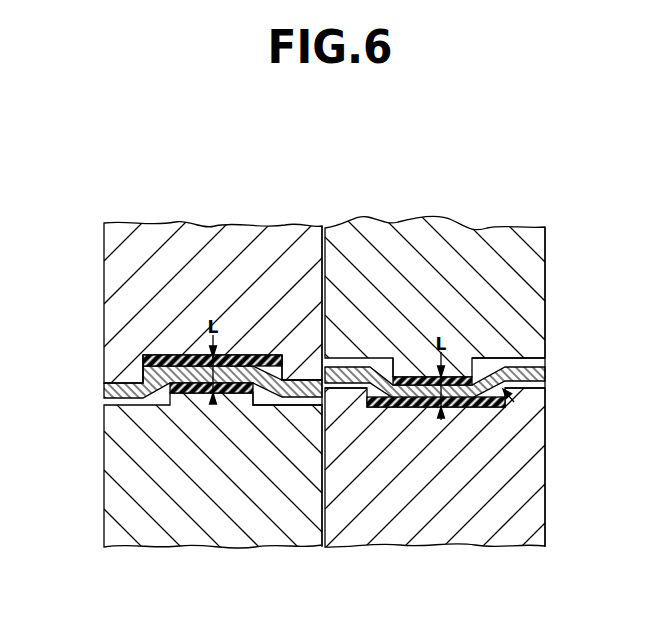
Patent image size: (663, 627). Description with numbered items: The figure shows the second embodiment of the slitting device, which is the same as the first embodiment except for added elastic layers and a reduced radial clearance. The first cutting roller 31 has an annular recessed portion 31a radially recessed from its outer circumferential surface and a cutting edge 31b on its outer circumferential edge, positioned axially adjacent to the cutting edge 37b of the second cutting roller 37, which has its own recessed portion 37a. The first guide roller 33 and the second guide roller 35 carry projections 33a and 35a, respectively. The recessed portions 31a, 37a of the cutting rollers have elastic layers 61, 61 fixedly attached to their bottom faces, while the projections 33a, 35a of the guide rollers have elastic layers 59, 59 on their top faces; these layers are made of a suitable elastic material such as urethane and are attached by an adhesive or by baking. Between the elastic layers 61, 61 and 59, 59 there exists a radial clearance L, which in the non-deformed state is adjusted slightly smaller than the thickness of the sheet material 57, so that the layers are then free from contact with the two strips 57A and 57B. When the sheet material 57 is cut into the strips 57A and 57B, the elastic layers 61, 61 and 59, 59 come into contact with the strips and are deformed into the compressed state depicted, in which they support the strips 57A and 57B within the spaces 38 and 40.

The first cutting roller 31 is at (216, 247).
The recessed portion 31a is at (276, 372).
The cutting edge 31b is at (320, 370).
The first guide roller 33 is at (426, 245).
The projection 33a is at (379, 372).
The second guide roller 35 is at (212, 522).
The projection 35a is at (267, 396).
The second cutting roller 37 is at (437, 527).
The recessed portion 37a is at (546, 387).
The cutting edge 37b is at (330, 384).
The space 38 is at (141, 373).
The space 40 is at (483, 374).
The sheet material 57 is at (536, 347).
The strip 57A is at (104, 390).
The strip 57B is at (546, 368).
The elastic layer 59 is at (459, 376).
The elastic layer 61 is at (182, 355).